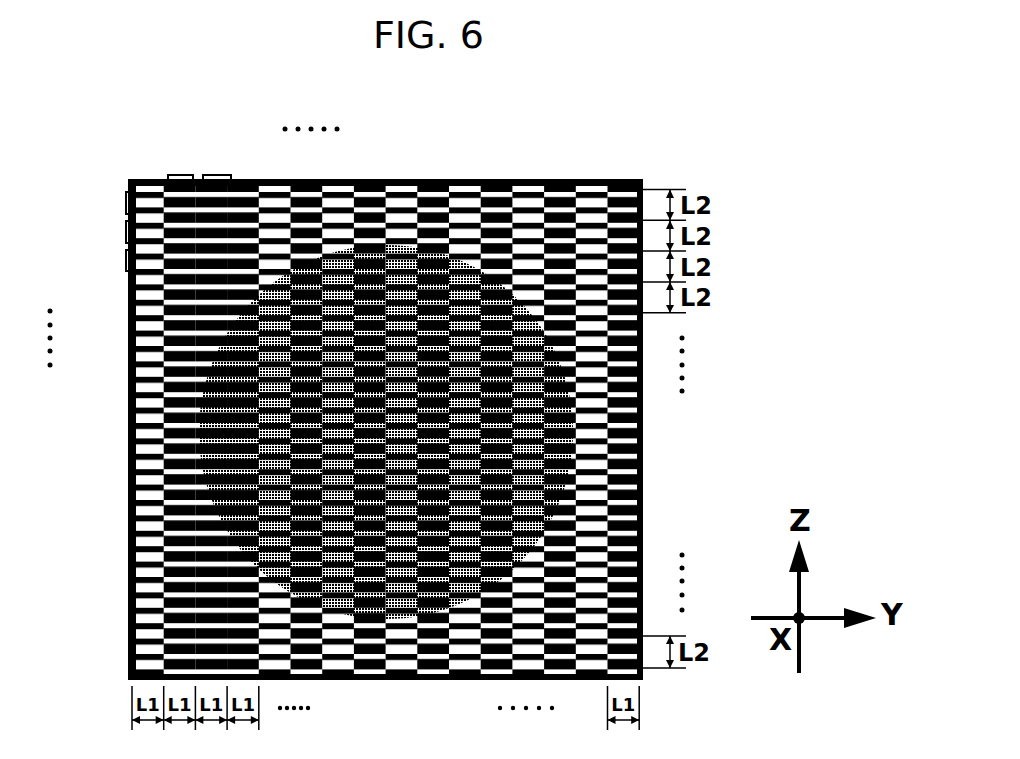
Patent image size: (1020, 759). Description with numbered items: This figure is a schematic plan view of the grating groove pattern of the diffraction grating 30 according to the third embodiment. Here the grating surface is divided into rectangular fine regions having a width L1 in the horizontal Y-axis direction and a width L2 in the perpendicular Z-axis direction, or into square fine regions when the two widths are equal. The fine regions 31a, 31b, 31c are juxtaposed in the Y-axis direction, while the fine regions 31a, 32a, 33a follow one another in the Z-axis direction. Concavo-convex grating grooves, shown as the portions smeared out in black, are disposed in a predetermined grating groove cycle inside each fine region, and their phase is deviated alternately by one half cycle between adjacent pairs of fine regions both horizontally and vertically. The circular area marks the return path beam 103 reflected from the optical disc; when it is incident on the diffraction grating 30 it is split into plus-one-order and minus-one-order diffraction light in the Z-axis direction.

The diffraction grating 30 is at (120, 535).
The rectangular fine region 31a is at (118, 201).
The rectangular fine region 32a is at (118, 228).
The rectangular fine region 33a is at (118, 255).
The rectangular fine region 31b is at (178, 167).
The rectangular fine region 31c is at (210, 167).
The return path beam 103 is at (192, 428).